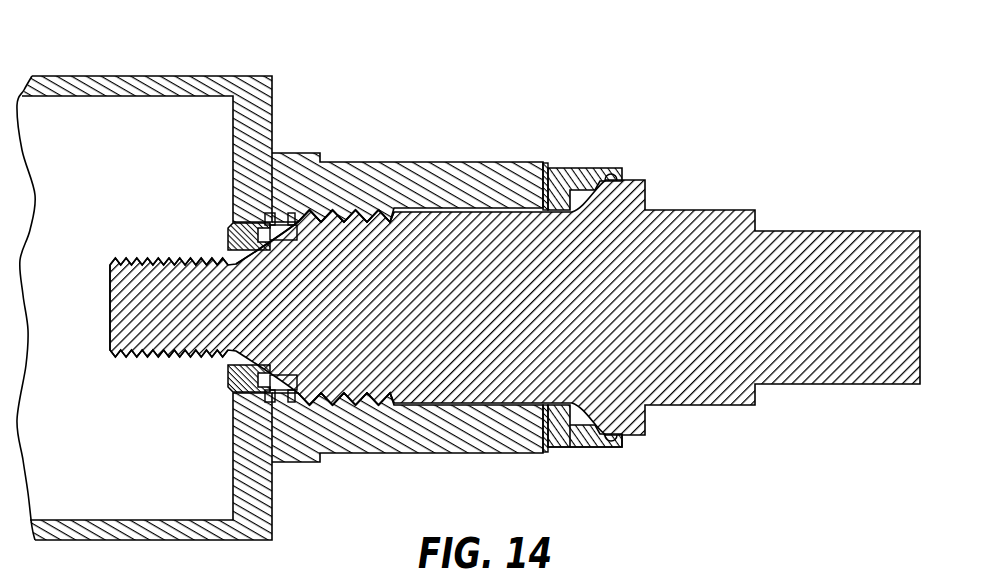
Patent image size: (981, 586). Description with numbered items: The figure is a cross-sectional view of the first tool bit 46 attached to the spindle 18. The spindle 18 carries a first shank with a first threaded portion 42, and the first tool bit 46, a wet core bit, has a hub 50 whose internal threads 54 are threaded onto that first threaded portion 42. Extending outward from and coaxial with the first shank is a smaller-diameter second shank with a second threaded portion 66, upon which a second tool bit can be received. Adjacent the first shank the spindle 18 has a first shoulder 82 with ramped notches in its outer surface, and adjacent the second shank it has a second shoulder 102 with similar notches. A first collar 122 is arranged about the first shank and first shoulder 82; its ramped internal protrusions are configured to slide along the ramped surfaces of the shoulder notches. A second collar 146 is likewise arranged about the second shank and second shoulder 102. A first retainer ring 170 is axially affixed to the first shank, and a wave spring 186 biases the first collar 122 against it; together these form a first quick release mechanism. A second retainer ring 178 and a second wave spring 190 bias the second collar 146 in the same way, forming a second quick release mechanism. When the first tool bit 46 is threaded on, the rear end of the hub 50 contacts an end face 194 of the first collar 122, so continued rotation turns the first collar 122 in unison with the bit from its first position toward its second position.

The spindle 18 is at (712, 210).
The first threaded portion 42 is at (362, 214).
The first tool bit 46 is at (123, 76).
The hub 50 is at (462, 162).
The internal threads 54 is at (338, 382).
The second threaded portion 66 is at (143, 258).
The first shoulder 82 is at (590, 448).
The second shoulder 102 is at (232, 388).
The first collar 122 is at (562, 168).
The second collar 146 is at (228, 240).
The first retainer ring 170 is at (548, 450).
The second retainer ring 178 is at (228, 358).
The wave spring 186 is at (617, 183).
The wave spring 190 is at (322, 214).
The end face 194 is at (540, 176).